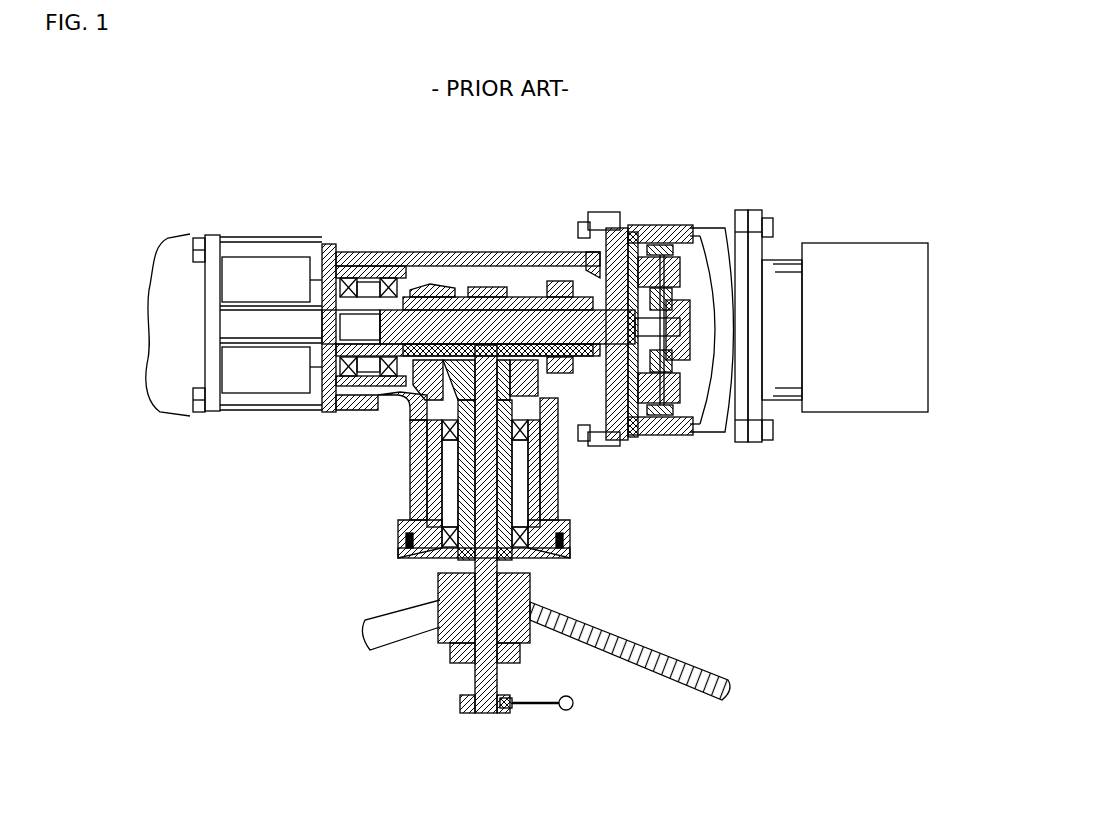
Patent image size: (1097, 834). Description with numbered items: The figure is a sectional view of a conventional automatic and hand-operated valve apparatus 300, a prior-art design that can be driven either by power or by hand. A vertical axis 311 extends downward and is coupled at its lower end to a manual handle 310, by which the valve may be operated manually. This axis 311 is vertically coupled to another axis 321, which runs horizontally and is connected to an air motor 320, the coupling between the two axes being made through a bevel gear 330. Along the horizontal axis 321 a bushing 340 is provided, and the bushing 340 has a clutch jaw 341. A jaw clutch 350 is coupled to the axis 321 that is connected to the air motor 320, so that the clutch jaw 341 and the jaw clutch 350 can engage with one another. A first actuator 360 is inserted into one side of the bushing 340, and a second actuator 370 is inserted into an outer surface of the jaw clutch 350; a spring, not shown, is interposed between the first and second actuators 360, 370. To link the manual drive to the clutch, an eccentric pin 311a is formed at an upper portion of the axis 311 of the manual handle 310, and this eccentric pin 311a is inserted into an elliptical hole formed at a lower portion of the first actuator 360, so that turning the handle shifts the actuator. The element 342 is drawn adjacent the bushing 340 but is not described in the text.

The conventional automatic and hand-operated valve apparatus 300 is at (192, 184).
The manual handle 310 is at (607, 641).
The axis 311 is at (478, 550).
The eccentric pin 311a is at (462, 367).
The air motor 320 is at (827, 257).
The axis 321 is at (430, 322).
The bevel gear 330 is at (435, 358).
The bushing 340 is at (452, 297).
The clutch jaw 341 is at (533, 297).
The lower gear 342 is at (508, 366).
The jaw clutch 350 is at (590, 302).
The first actuator 360 is at (482, 289).
The second actuator 370 is at (560, 292).